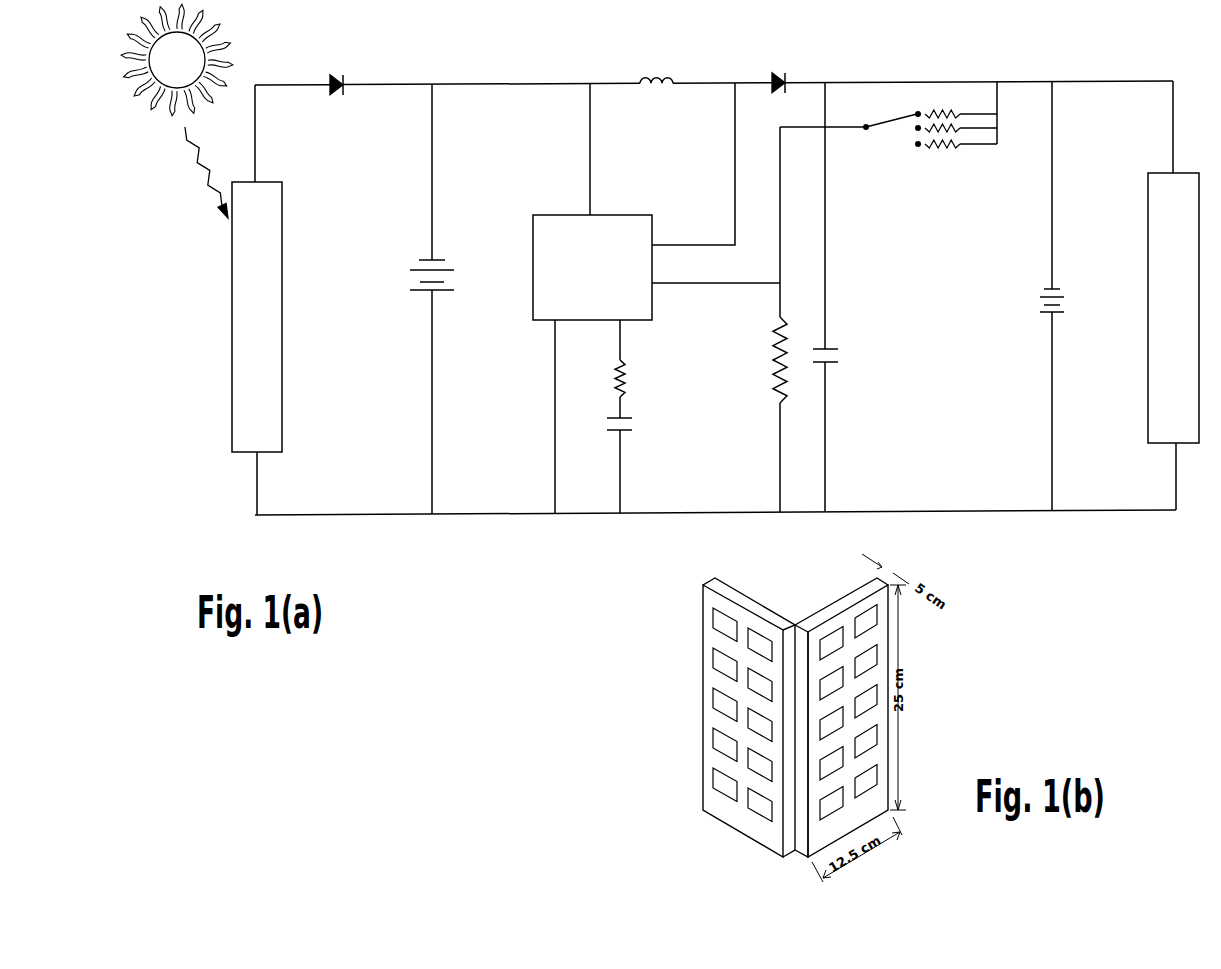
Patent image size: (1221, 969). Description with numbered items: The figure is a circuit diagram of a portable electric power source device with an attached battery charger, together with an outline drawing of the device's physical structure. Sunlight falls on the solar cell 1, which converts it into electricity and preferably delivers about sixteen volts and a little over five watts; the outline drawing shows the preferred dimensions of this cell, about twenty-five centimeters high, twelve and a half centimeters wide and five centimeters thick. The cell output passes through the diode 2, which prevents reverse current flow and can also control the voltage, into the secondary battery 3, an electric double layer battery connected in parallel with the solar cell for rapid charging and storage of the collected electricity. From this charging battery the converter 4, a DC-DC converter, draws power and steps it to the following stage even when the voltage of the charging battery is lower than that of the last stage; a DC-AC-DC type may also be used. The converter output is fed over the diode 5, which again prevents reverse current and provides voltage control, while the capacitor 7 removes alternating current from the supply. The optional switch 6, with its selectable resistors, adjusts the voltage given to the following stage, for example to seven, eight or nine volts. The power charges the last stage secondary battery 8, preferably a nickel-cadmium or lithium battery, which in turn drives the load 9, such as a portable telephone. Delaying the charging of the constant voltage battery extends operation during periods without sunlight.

The solar cell 1 is at (218, 333).
The diode for preventing reverse current flow and for controlling voltage 2 is at (340, 68).
The secondary battery for high-speed charging 3 is at (405, 250).
The DC—DC converter 4 is at (564, 205).
The diode for preventing reverse flow and for controlling voltage 5 is at (775, 53).
The switch 6 is at (884, 152).
The capacitor for removing alternating current 7 is at (843, 371).
The last stage secondary battery 8 is at (1020, 305).
The load 9 is at (1136, 369).